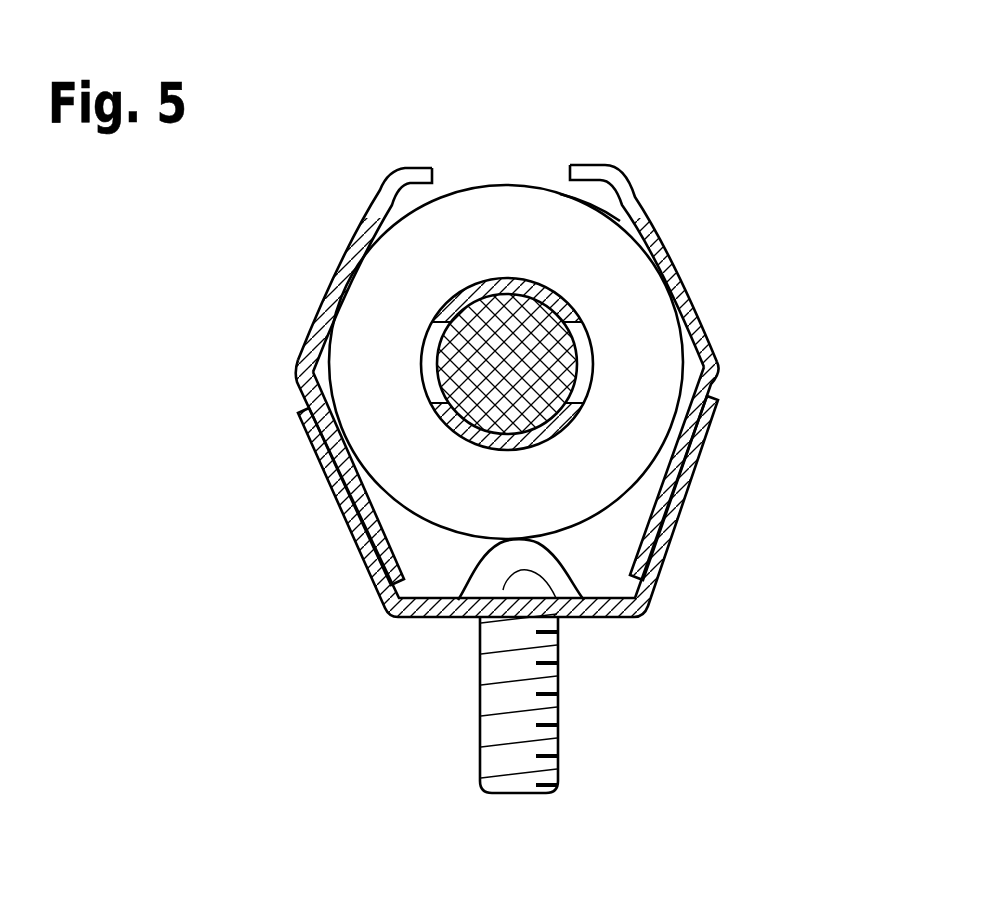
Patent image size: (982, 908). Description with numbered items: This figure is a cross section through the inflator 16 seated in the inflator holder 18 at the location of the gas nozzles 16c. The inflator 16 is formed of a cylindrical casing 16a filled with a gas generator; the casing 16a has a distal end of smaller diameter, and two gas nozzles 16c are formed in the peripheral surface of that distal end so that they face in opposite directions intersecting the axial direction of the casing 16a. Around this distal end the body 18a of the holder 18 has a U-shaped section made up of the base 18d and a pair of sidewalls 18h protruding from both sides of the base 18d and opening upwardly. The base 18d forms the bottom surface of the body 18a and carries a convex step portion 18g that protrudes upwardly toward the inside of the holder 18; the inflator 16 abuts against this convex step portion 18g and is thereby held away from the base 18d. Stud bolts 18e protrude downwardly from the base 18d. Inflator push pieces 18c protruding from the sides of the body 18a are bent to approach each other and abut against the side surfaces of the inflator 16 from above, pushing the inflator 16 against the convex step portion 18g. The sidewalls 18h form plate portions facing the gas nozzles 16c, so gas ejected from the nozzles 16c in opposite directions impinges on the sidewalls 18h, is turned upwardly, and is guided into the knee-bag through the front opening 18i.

The inflator 16 is at (507, 178).
The casing 16a is at (573, 225).
The gas nozzles 16c is at (420, 359).
The inflator holder 18 is at (504, 491).
The body 18a is at (386, 601).
The inflator push pieces 18c is at (393, 167).
The base 18d is at (556, 598).
The stud bolts 18e is at (526, 778).
The convex step portion 18g is at (463, 577).
The sidewalls 18h is at (297, 362).
The front opening 18i is at (468, 187).